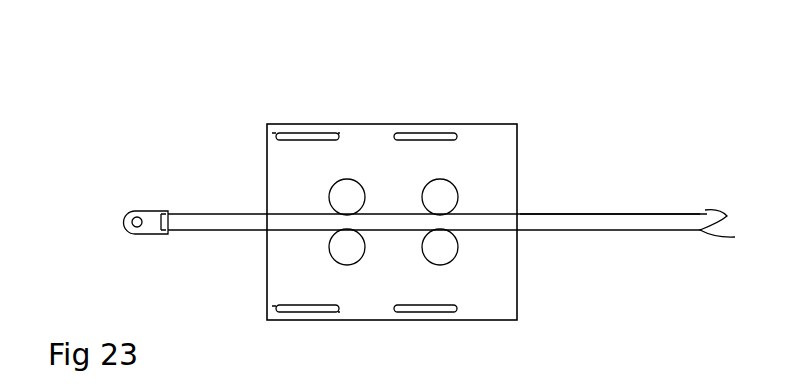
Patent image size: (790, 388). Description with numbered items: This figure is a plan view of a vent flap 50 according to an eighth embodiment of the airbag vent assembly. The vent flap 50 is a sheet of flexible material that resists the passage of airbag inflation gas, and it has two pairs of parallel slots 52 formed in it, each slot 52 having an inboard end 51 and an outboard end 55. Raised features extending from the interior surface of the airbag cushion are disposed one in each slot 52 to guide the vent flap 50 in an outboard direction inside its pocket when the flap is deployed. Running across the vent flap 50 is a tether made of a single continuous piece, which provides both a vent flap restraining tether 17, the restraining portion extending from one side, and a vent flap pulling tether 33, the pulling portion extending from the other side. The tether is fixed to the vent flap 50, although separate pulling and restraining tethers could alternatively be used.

The vent flap restraining tether 17 is at (222, 218).
The vent flap pulling tether 33 is at (570, 228).
The vent flap 50 is at (507, 190).
The inboard end 51 is at (277, 134).
The slot 52 is at (307, 133).
The outboard end 55 is at (338, 133).